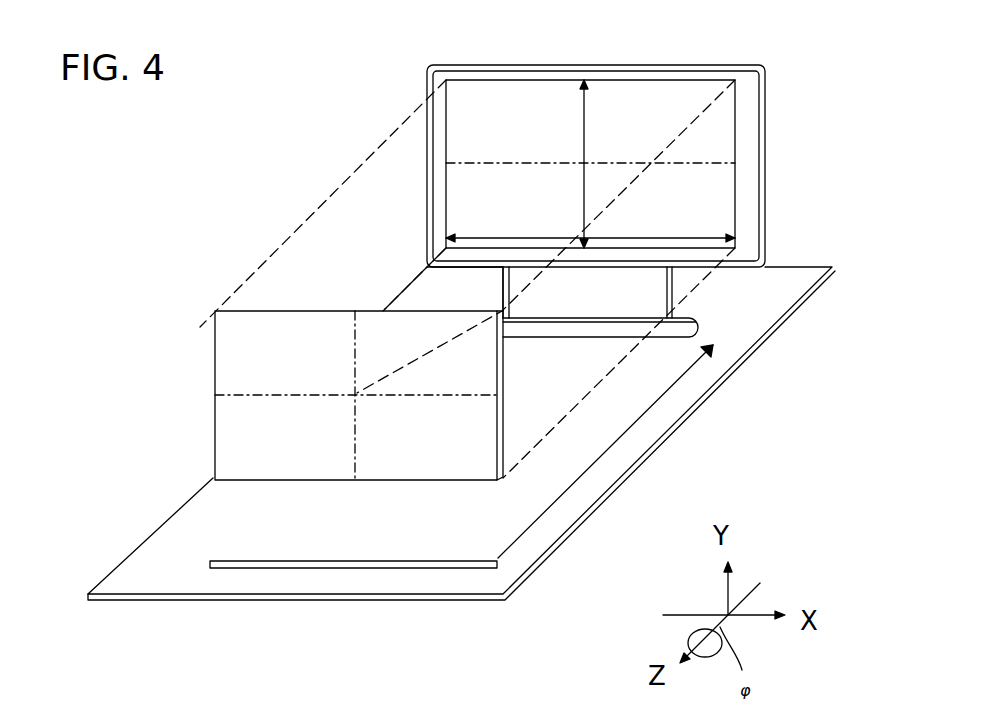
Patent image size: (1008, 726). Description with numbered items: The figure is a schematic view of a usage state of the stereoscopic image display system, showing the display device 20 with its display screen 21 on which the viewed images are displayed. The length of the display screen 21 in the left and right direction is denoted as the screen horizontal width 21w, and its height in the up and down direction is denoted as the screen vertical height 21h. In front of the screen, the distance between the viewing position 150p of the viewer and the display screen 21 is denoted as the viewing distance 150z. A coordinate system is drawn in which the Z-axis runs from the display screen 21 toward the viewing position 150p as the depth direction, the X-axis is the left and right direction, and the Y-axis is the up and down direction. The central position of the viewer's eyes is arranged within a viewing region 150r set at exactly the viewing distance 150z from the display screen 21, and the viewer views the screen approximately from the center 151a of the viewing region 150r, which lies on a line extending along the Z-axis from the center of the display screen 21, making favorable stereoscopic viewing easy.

The display device 20 is at (765, 107).
The display screen 21 is at (703, 195).
The screen horizontal width 21w is at (547, 235).
The screen vertical height 21h is at (590, 125).
The center of the viewing region 151a is at (355, 393).
The viewing position 150p is at (363, 568).
The viewing distance 150z is at (693, 372).
The viewing region 150r is at (427, 455).